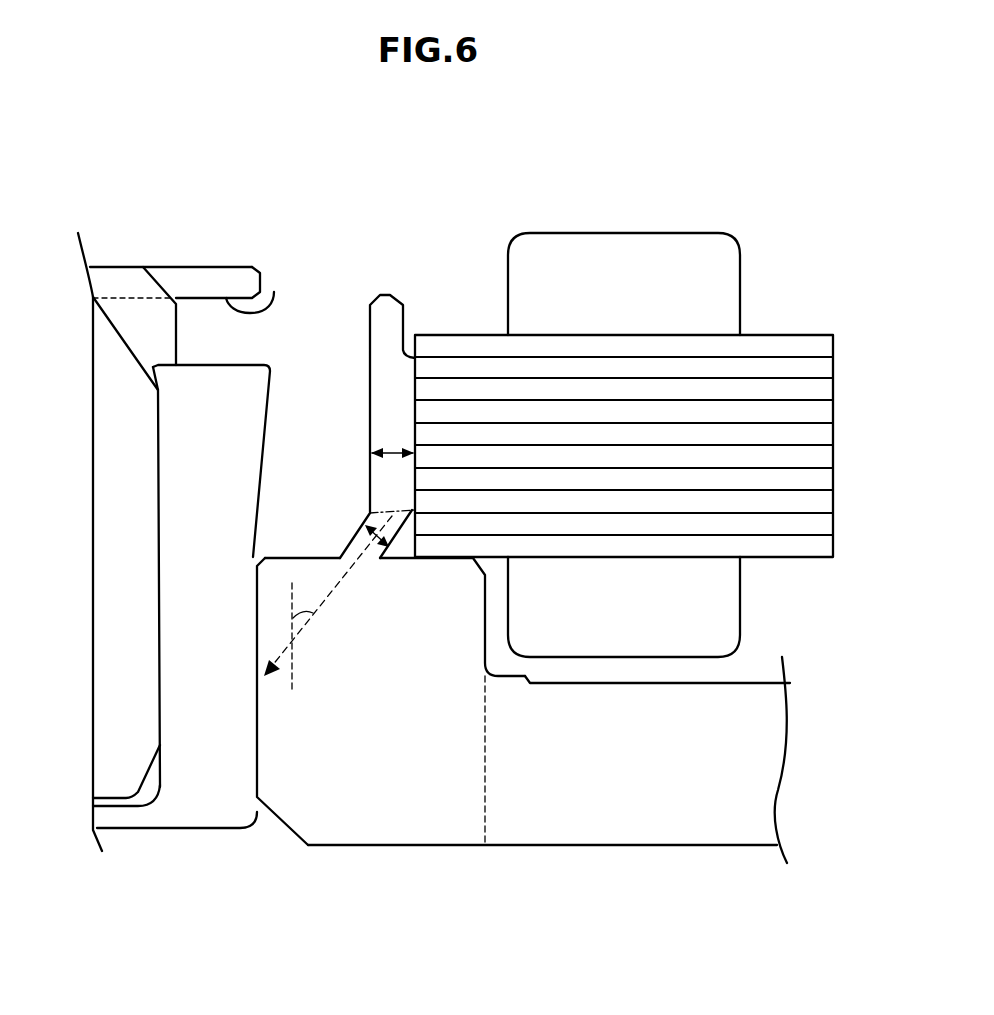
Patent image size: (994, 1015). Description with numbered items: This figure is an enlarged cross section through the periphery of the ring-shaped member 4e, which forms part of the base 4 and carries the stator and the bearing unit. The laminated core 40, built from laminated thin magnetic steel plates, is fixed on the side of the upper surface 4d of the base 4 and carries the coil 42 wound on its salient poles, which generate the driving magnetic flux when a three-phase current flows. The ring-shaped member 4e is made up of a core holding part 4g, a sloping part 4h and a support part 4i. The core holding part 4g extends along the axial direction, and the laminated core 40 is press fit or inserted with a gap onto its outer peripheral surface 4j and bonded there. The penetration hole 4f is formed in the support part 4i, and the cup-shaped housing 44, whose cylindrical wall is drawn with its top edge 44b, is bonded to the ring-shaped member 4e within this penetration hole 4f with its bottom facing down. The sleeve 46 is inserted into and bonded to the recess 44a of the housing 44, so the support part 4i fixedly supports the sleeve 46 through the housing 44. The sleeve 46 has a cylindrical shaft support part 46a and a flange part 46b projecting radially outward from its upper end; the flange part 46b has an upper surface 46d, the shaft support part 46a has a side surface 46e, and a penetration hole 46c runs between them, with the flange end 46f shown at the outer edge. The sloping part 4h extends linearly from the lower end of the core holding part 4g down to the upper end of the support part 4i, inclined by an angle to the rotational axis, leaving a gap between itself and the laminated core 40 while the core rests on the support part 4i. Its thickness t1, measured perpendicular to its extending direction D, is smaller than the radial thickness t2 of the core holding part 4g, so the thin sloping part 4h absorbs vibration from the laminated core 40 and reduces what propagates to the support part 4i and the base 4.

The base 4 is at (697, 822).
The upper surface 4d is at (623, 683).
The ring-shaped member 4e is at (472, 899).
The penetration hole 4f is at (257, 708).
The core holding part 4g is at (415, 477).
The sloping part 4h is at (403, 473).
The support part 4i is at (345, 807).
The outer peripheral surface 4j is at (415, 390).
The laminated core 40 is at (799, 367).
The coil 42 is at (615, 600).
The housing 44 is at (200, 787).
The recess 44a is at (160, 708).
The top of block 44b is at (238, 365).
The sleeve 46 is at (122, 762).
The shaft support part 46a is at (118, 633).
The flange part 46b is at (232, 280).
The penetration hole 46c is at (123, 280).
The upper surface 46d is at (178, 267).
The side surface 46e is at (158, 527).
The hook end of clip 46f is at (274, 290).
The thickness of the sloping part t1 is at (367, 523).
The thickness of the core holding part t2 is at (390, 452).
The extending direction D is at (330, 593).